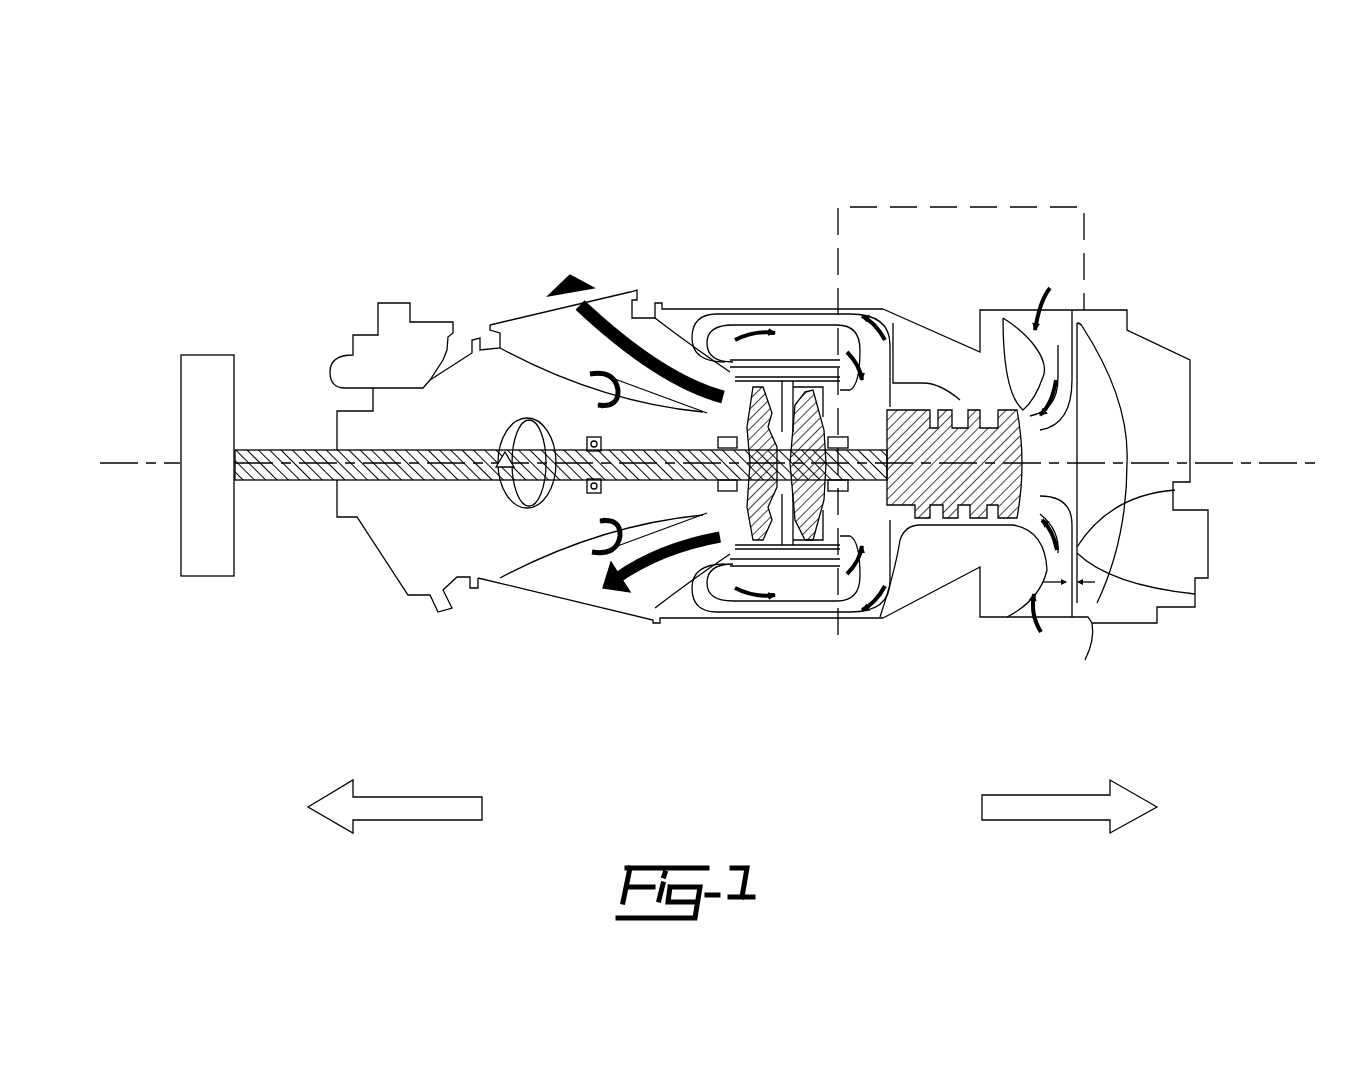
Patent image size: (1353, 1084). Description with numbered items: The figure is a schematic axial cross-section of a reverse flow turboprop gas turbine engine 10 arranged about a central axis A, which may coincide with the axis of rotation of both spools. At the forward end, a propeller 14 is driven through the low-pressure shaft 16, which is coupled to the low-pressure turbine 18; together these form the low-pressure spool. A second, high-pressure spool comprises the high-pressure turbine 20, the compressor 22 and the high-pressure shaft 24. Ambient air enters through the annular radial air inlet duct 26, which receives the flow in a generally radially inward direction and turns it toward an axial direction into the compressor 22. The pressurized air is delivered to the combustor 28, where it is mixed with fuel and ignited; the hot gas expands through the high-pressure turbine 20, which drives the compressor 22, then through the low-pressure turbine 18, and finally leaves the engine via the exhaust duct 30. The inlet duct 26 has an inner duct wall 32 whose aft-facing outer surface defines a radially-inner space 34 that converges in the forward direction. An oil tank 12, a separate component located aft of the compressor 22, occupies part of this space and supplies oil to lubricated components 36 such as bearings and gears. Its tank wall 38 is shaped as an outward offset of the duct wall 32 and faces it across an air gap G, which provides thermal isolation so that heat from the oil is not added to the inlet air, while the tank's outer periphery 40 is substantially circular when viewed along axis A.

The gas turbine engine 10 is at (306, 199).
The oil tank 12 is at (1106, 459).
The propeller 14 is at (226, 361).
The low-pressure shaft 16 is at (390, 455).
The low-pressure turbine 18 is at (748, 387).
The high-pressure turbine 20 is at (812, 392).
The compressor 22 is at (930, 410).
The high-pressure shaft 24 is at (905, 585).
The annular radial air inlet duct 26 is at (1015, 617).
The combustor 28 is at (790, 590).
The exhaust duct 30 is at (561, 577).
The inner duct wall 32 is at (1195, 594).
The radially-inner space 34 is at (1053, 410).
The component 36 is at (838, 555).
The tank wall 38 is at (1175, 490).
The outer periphery 40 is at (1107, 620).
The air gap G is at (1068, 590).
The axis A is at (143, 470).